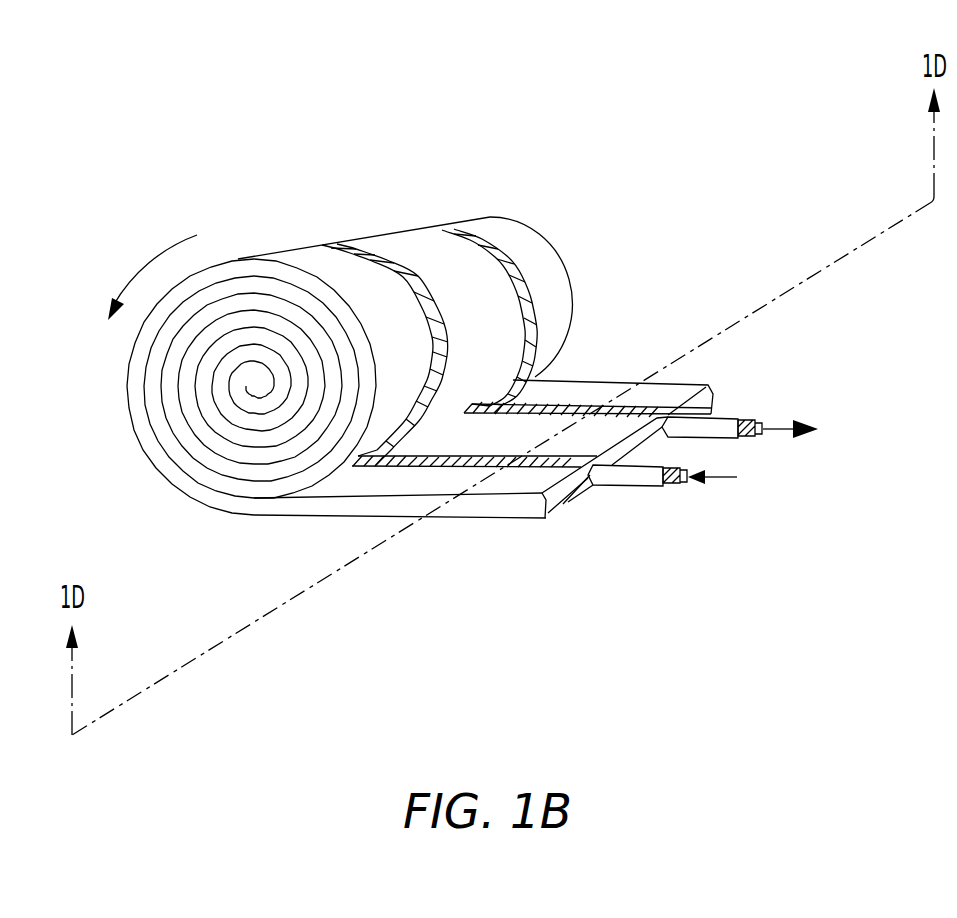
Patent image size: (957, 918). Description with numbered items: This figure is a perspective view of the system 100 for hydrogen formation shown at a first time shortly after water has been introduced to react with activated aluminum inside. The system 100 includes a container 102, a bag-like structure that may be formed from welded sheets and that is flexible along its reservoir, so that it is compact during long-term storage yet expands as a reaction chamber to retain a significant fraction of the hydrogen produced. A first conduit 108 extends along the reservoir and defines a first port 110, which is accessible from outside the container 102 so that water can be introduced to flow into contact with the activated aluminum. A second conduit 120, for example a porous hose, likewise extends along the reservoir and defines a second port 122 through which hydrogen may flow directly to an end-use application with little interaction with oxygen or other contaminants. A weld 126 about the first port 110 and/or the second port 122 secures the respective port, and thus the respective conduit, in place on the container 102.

The system for hydrogen formation 100 is at (135, 128).
The container 102 is at (395, 268).
The first conduit 108 is at (637, 478).
The first port 110 is at (688, 483).
The second conduit 120 is at (730, 426).
The second port 122 is at (762, 438).
The weld 126 is at (556, 520).